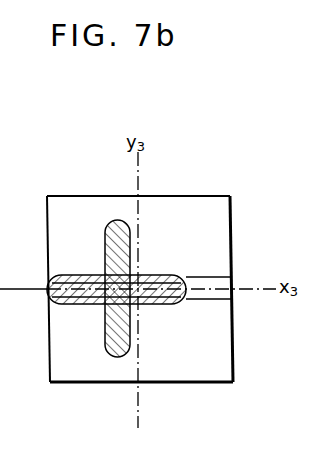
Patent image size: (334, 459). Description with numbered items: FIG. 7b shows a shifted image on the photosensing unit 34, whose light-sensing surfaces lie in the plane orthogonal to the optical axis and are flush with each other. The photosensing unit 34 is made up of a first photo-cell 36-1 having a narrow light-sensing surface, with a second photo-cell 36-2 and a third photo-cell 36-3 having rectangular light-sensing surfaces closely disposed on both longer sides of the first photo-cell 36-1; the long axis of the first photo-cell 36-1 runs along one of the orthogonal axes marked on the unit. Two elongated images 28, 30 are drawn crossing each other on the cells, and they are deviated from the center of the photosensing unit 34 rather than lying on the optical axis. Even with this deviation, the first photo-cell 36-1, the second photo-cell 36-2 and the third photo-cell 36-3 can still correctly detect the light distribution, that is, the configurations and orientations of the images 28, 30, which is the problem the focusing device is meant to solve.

The photosensing unit 34 is at (228, 166).
The first photo-cell 36-1 is at (232, 282).
The second photo-cell 36-2 is at (73, 214).
The third photo-cell 36-3 is at (198, 365).
The image 28 is at (62, 278).
The image 30 is at (107, 333).